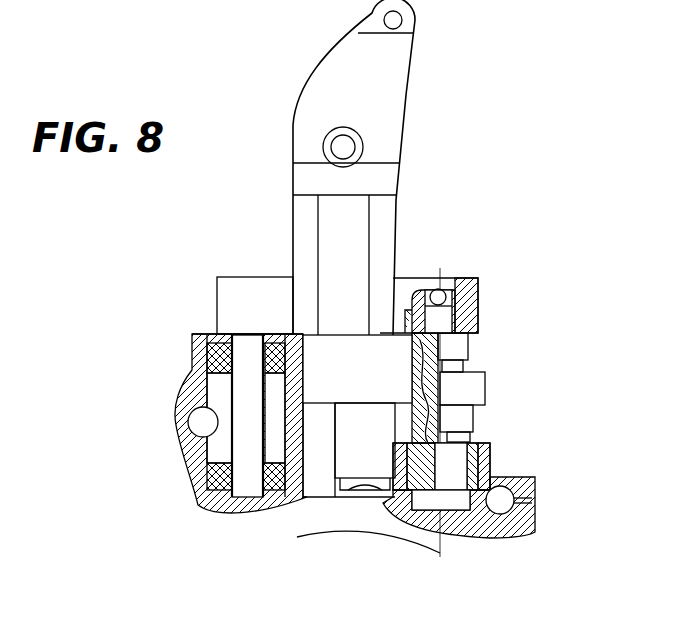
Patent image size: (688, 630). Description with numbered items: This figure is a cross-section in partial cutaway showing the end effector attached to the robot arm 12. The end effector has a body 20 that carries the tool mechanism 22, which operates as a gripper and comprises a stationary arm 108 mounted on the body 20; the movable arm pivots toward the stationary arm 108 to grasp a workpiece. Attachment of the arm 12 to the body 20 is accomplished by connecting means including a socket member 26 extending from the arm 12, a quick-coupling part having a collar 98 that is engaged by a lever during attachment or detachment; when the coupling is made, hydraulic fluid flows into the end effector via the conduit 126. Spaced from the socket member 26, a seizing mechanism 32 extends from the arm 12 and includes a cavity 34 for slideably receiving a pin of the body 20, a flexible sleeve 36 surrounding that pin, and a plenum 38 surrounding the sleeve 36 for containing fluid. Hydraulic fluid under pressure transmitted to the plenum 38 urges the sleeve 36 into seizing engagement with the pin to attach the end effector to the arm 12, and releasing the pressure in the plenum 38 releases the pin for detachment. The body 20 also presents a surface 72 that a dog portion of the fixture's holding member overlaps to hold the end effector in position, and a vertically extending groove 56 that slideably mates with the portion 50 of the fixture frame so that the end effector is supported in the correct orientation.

The stationary arm 108 is at (407, 95).
The groove 56 is at (358, 230).
The surface 72 is at (276, 277).
The body 20 is at (217, 307).
The conduit 126 is at (452, 302).
The tool mechanism 22 is at (470, 355).
The collar 98 is at (486, 393).
The socket member 26 is at (475, 412).
The cavity 34 is at (227, 378).
The flexible sleeve 36 is at (185, 413).
The plenum 38 is at (215, 462).
The seizing mechanism 32 is at (185, 452).
The portion 50 is at (245, 482).
The robot arm 12 is at (386, 537).